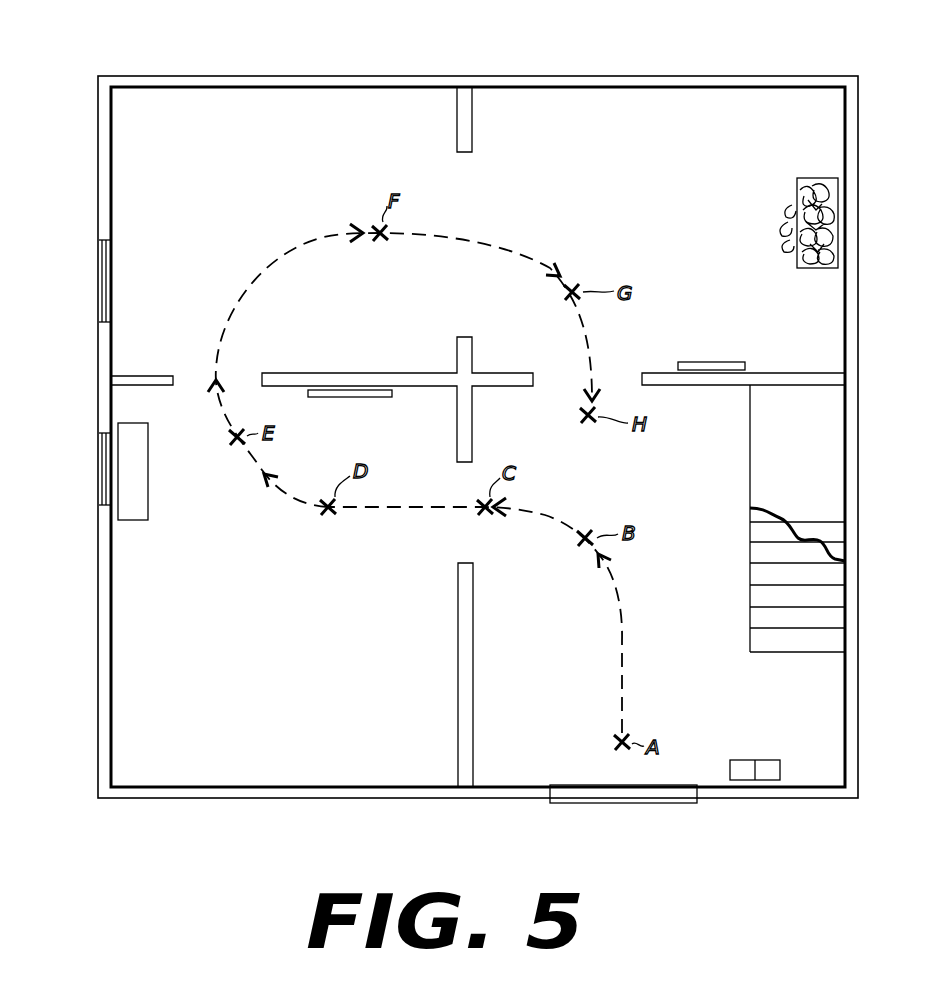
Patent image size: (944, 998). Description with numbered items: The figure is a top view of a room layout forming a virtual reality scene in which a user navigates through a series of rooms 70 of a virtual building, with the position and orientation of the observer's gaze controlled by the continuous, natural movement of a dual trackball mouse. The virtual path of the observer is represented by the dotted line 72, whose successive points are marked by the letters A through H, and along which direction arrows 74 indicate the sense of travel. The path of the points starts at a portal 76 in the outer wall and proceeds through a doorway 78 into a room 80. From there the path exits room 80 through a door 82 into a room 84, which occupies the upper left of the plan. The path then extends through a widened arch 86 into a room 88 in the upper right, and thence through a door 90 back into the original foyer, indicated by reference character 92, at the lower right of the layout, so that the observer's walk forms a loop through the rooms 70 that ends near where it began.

The rooms 70 is at (135, 109).
The dotted line 72 is at (624, 718).
The direction arrows 74 is at (356, 242).
The portal 76 is at (634, 796).
The doorway 78 is at (464, 562).
The room 80 is at (264, 652).
The door 82 is at (172, 374).
The room 84 is at (246, 168).
The widened arch 86 is at (504, 297).
The room 88 is at (692, 173).
The door 90 is at (646, 374).
The foyer 92 is at (702, 453).